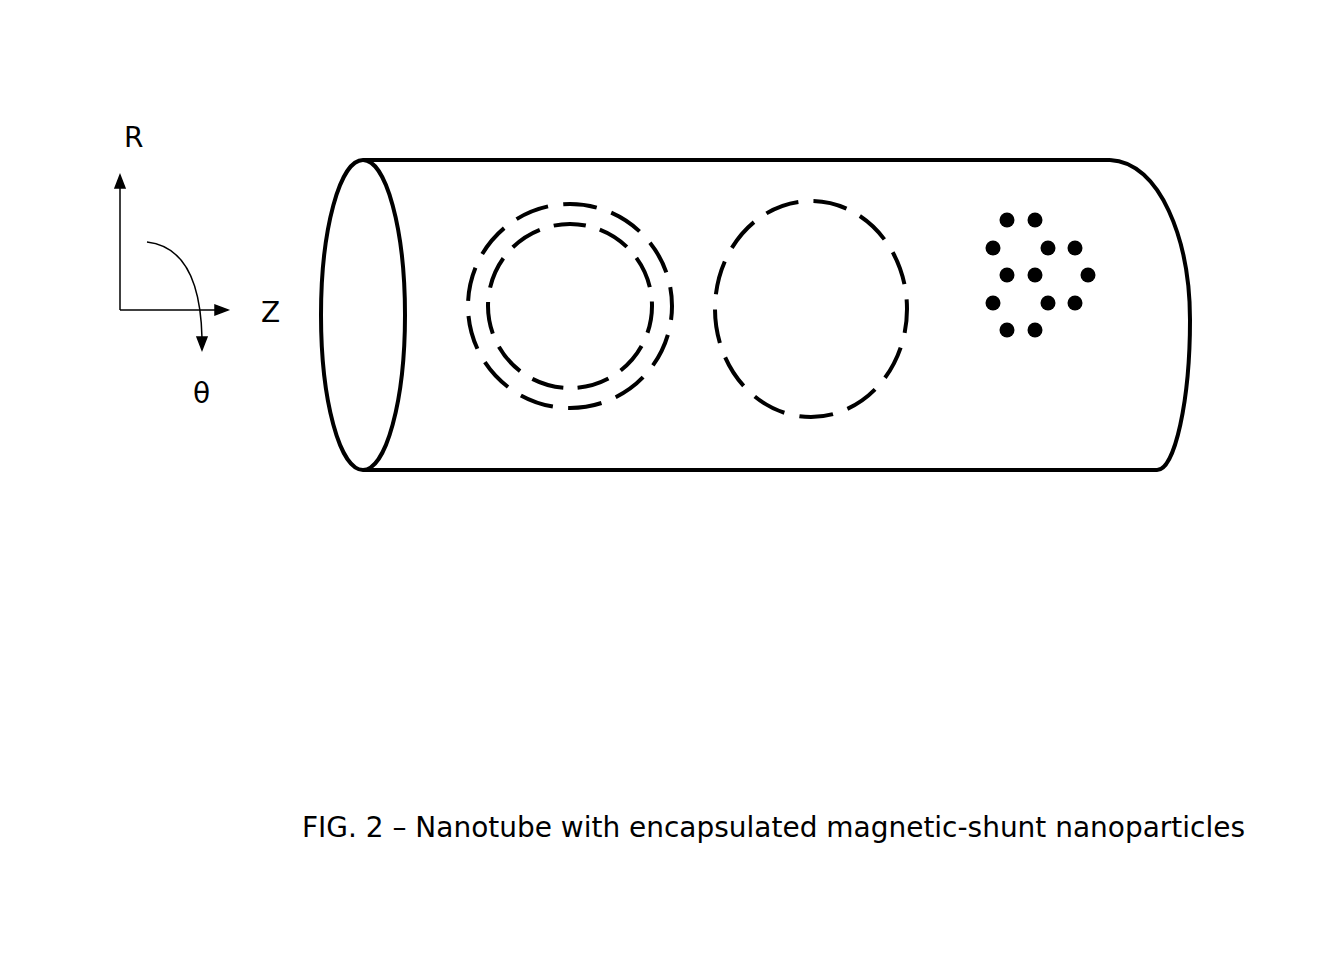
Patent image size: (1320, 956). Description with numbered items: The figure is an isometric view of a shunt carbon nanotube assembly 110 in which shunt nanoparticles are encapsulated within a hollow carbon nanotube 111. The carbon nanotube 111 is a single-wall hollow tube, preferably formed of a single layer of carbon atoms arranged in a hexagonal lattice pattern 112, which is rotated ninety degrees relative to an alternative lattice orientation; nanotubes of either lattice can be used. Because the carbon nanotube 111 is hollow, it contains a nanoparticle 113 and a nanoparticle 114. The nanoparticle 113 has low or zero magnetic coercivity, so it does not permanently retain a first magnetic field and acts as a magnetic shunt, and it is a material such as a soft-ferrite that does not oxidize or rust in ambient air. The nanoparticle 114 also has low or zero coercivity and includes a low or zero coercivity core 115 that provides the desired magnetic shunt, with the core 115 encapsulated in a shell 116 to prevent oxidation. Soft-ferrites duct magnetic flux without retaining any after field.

The shunt carbon nanotube assembly 110 is at (878, 122).
The carbon nanotube 111 is at (1112, 157).
The hexagonal lattice pattern 112 is at (1080, 245).
The nanoparticle 113 is at (825, 390).
The nanoparticle 114 is at (525, 405).
The core 115 is at (607, 330).
The shell 116 is at (580, 397).